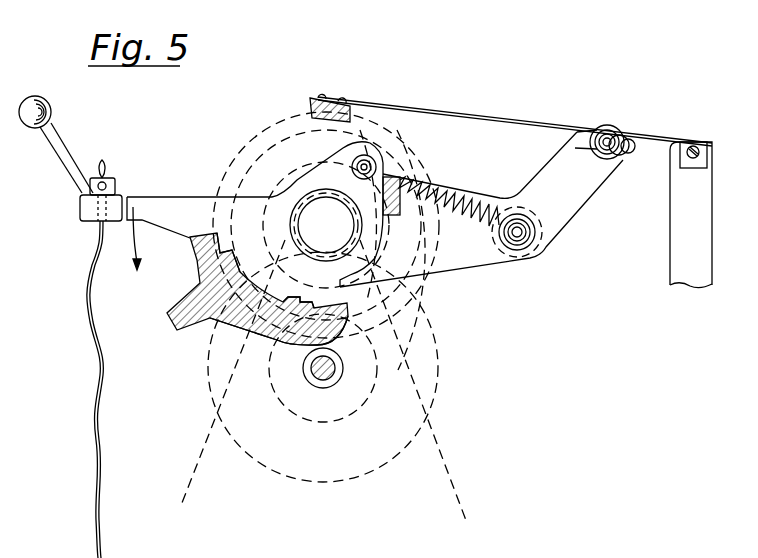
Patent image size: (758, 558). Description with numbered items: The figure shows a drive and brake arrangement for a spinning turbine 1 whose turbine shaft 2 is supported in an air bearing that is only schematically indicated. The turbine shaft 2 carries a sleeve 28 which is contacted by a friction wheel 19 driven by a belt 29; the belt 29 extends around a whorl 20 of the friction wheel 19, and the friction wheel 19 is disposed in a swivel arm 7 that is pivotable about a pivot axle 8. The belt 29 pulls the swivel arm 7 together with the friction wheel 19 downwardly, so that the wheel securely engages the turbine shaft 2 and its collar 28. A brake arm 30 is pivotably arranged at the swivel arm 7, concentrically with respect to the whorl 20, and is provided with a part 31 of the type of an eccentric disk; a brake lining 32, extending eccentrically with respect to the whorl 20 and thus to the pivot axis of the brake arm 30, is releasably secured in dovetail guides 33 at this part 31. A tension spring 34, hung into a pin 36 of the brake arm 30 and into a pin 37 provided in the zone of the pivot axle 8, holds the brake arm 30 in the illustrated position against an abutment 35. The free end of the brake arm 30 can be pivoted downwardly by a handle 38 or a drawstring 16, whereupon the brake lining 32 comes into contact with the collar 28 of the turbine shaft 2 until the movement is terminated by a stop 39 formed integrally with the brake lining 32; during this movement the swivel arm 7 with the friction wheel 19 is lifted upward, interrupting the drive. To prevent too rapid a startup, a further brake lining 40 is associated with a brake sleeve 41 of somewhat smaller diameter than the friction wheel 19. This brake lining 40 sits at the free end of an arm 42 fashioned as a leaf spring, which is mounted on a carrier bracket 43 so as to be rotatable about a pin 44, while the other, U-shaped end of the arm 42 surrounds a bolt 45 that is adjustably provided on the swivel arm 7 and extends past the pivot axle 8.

The spinning turbine 1 is at (310, 470).
The turbine shaft 2 is at (325, 372).
The swivel arm 7 is at (462, 258).
The pivot axle 8 is at (519, 240).
The drawstring 16 is at (112, 400).
The friction wheel 19 is at (245, 138).
The whorl 20 is at (317, 195).
The sleeve 28 is at (343, 367).
The belt 29 is at (202, 457).
The brake arm 30 is at (175, 212).
The part 31 is at (262, 318).
The brake lining 32 is at (223, 320).
The dovetail guides 33 is at (232, 262).
The tension spring 34 is at (447, 197).
The abutment 35 is at (392, 217).
The pin 36 is at (370, 160).
The pin 37 is at (530, 248).
The handle 38 is at (40, 111).
The stop 39 is at (200, 299).
The brake lining 40 is at (333, 102).
The brake sleeve 41 is at (277, 143).
The arm 42 is at (440, 112).
The carrier bracket 43 is at (685, 160).
The pin 44 is at (689, 140).
The bolt 45 is at (603, 130).